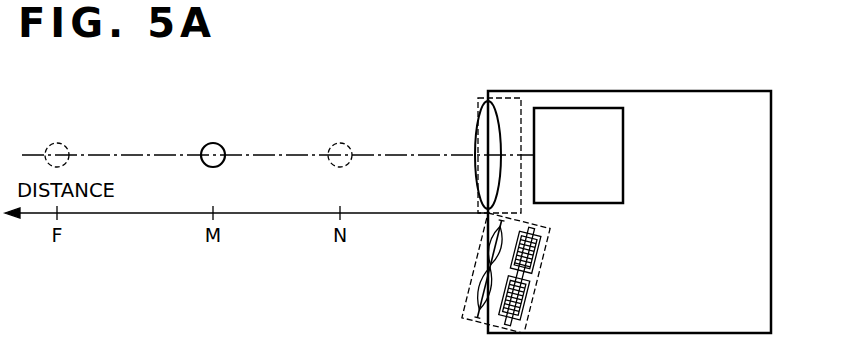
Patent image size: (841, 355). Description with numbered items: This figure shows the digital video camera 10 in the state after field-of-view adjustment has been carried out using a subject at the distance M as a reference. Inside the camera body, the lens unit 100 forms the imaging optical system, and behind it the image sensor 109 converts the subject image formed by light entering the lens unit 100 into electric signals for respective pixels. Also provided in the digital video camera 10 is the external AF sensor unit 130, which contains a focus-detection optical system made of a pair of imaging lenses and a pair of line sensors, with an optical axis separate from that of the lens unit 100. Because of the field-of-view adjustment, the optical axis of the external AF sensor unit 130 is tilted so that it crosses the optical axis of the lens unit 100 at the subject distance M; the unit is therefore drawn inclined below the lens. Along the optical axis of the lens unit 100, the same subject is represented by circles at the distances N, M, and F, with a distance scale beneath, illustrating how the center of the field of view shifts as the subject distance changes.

The digital video camera 10 is at (672, 91).
The lens unit 100 is at (503, 98).
The image sensor 109 is at (566, 108).
The external AF sensor unit 130 is at (537, 296).